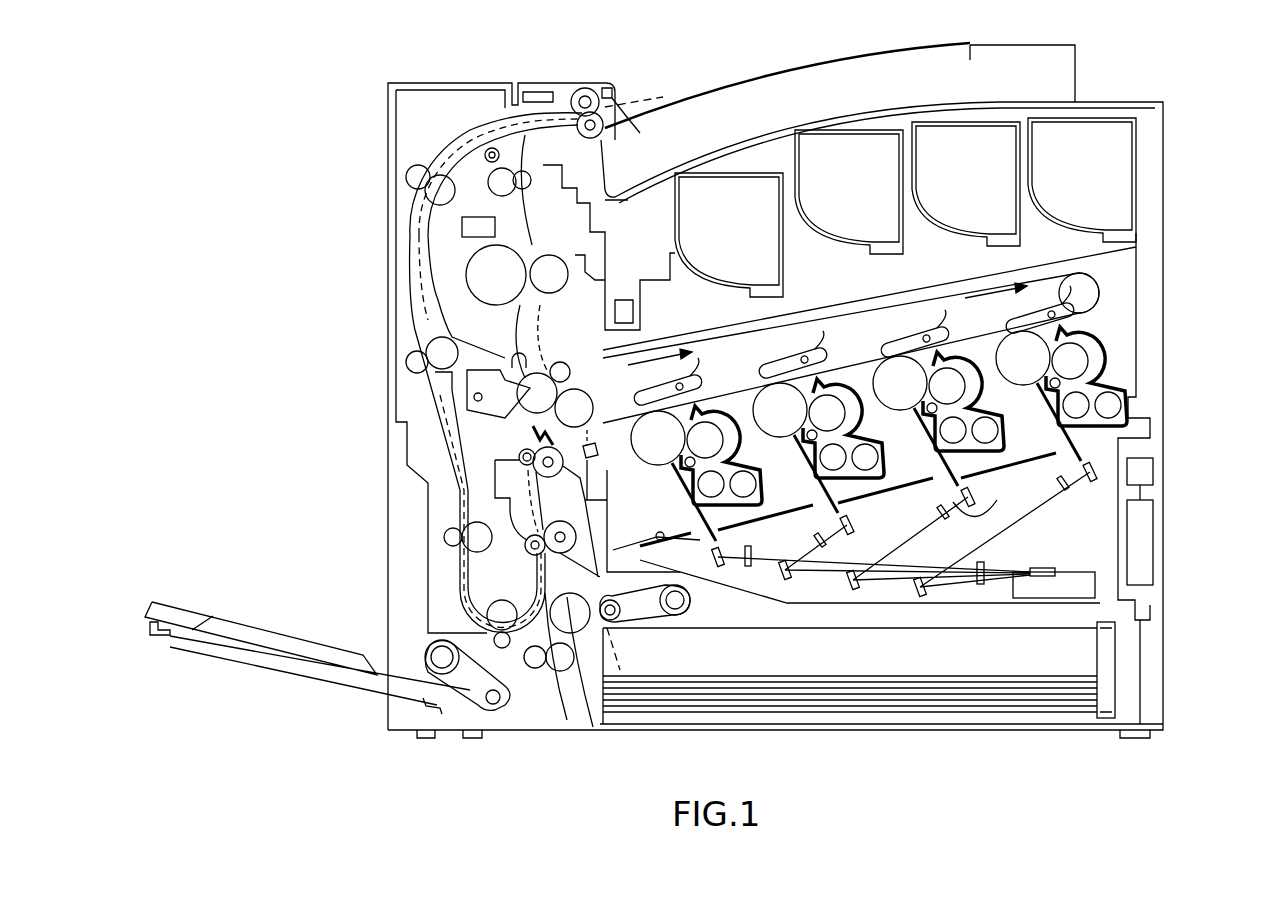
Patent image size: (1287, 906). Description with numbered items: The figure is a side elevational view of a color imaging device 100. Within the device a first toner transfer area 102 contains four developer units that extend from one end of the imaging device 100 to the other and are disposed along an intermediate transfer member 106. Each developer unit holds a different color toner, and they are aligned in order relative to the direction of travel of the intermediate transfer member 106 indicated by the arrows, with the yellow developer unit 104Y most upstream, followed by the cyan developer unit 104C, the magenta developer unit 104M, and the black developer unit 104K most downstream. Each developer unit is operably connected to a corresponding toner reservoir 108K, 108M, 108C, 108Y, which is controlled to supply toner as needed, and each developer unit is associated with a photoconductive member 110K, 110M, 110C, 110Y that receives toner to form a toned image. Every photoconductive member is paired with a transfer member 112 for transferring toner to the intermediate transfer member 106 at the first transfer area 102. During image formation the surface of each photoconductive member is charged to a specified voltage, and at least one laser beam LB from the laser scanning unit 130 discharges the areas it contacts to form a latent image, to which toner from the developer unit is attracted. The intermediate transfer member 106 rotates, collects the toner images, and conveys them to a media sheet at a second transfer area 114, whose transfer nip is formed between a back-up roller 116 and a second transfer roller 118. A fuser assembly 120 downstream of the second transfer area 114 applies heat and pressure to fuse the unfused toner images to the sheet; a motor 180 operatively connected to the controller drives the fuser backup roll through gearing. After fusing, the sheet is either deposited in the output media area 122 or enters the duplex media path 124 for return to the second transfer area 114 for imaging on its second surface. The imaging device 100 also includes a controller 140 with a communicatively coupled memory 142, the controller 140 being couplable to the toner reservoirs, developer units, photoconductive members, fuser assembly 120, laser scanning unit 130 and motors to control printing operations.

The color imaging device 100 is at (708, 389).
The first toner transfer area 102 is at (1183, 308).
The black developer unit 104K is at (722, 415).
The magenta developer unit 104M is at (847, 393).
The cyan developer unit 104C is at (992, 390).
The yellow developer unit 104Y is at (1127, 377).
The intermediate transfer member 106 is at (923, 300).
The toner reservoir 108K is at (729, 235).
The toner reservoir 108M is at (849, 192).
The toner reservoir 108C is at (966, 184).
The toner reservoir 108Y is at (1082, 180).
The photoconductive member 110K is at (643, 443).
The photoconductive member 110M is at (775, 423).
The photoconductive member 110C is at (895, 397).
The photoconductive member 110Y is at (1038, 396).
The transfer member 112 is at (633, 402).
The second transfer area 114 is at (525, 430).
The back-up roller 116 is at (582, 377).
The second transfer roller 118 is at (512, 382).
The fuser assembly 120 is at (456, 243).
The output media area 122 is at (717, 118).
The duplex media path 124 is at (398, 318).
The laser scanning unit 130 is at (878, 588).
The controller 140 is at (1147, 530).
The memory 142 is at (1150, 480).
The motor 180 is at (480, 217).
The laser beam LB is at (1043, 500).